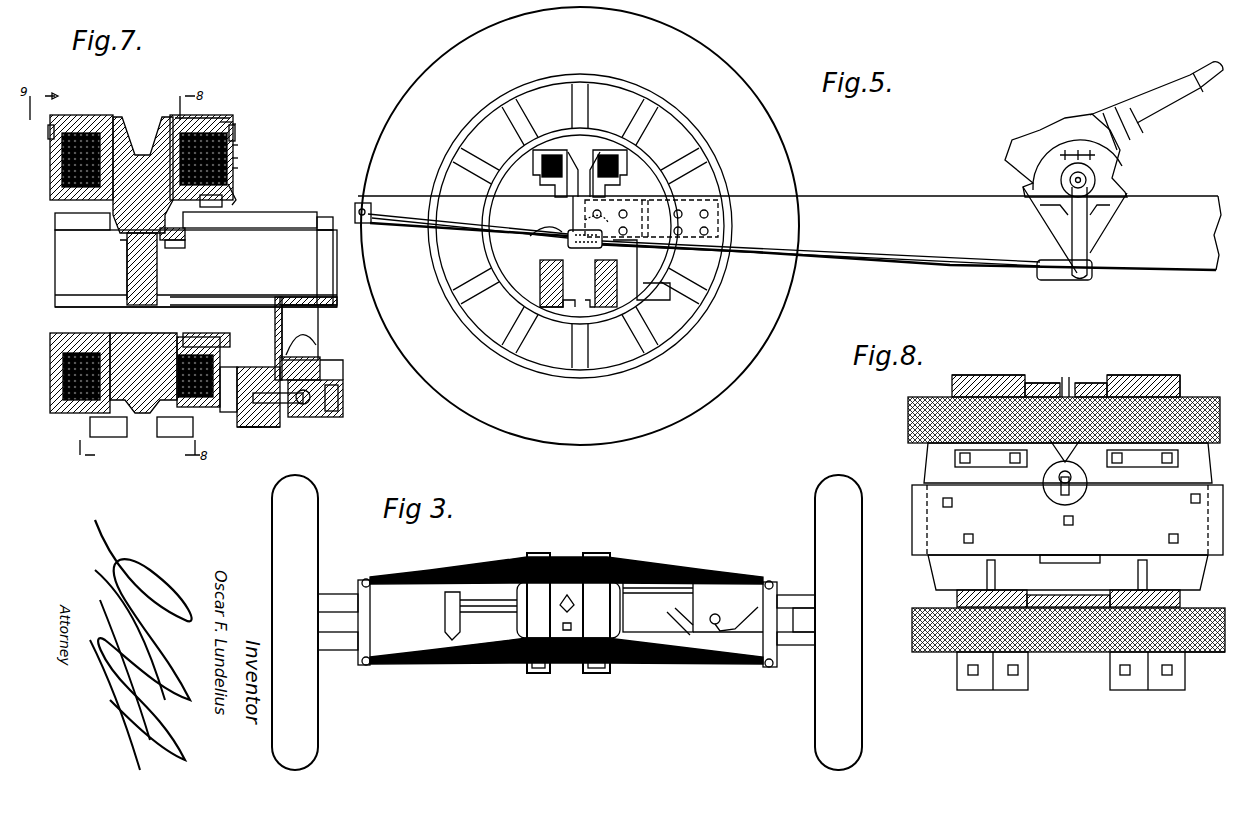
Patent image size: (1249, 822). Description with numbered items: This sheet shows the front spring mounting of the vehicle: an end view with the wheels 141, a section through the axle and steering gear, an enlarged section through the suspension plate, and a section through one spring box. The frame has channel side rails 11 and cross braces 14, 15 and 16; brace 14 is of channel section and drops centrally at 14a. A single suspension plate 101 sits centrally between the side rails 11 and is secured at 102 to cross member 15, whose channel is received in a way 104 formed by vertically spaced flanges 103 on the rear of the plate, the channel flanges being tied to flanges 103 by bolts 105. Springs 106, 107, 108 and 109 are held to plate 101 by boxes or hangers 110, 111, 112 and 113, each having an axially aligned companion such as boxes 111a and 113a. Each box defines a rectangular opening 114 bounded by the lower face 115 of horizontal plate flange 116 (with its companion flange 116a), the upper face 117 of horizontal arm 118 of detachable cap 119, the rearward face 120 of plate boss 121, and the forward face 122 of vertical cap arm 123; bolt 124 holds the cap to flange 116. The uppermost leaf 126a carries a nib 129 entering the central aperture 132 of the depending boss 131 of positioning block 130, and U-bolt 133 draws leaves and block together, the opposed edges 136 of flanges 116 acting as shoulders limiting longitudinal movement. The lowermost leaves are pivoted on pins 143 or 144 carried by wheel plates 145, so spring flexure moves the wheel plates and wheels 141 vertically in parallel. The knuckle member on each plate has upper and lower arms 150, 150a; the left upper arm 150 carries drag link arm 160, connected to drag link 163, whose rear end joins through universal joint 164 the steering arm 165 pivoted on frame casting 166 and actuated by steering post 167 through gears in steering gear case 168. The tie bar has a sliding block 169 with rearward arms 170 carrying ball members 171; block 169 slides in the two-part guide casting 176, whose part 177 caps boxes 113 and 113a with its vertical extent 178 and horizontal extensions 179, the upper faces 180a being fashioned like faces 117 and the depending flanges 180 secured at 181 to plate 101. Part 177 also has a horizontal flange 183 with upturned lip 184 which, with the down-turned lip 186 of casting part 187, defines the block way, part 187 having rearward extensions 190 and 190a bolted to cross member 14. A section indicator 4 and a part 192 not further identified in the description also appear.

In FIG. 3, the section line 4 is at (445, 620).
In FIG. 7, the channel side rail 11 is at (56, 250).
In FIG. 5, the channel side rail 11 is at (789, 233).
In FIG. 3, the channel side rail 11 is at (690, 614).
In FIG. 7, the cross brace 14 is at (275, 245).
In FIG. 7, the dropped central portion of cross brace 14a is at (318, 324).
In FIG. 7, the cross brace 15 is at (158, 252).
In FIG. 3, the cross brace 15 is at (605, 610).
In FIG. 8, the cross brace 15 is at (1067, 537).
In FIG. 5, the cross brace 16 is at (370, 205).
In FIG. 7, the suspension plate 101 is at (118, 288).
In FIG. 5, the suspension plate 101 is at (582, 165).
In FIG. 8, the suspension plate 101 is at (1195, 468).
In FIG. 7, the securing point 102 is at (125, 250).
In FIG. 7, the flanges 103 is at (185, 230).
In FIG. 7, the way 104 is at (100, 222).
In FIG. 7, the bolts 105 is at (188, 244).
In FIG. 5, the bolts 105 is at (540, 172).
In FIG. 7, the spring 106 is at (112, 118).
In FIG. 7, the spring 107 is at (236, 135).
In FIG. 5, the spring 107 is at (625, 162).
In FIG. 8, the spring 107 is at (1205, 395).
In FIG. 7, the spring 108 is at (215, 300).
In FIG. 5, the spring 108 is at (540, 277).
In FIG. 7, the spring 109 is at (279, 298).
In FIG. 5, the spring 109 is at (608, 302).
In FIG. 7, the spring box 110 is at (62, 118).
In FIG. 7, the spring box 111 is at (215, 118).
In FIG. 8, the spring box 111 is at (995, 377).
In FIG. 8, the companion spring box 111a is at (1140, 377).
In FIG. 7, the spring box 112 is at (88, 420).
In FIG. 7, the spring box 113 is at (78, 455).
In FIG. 8, the spring box 113 is at (992, 665).
In FIG. 7, the companion spring box 113a is at (195, 300).
In FIG. 8, the companion spring box 113a is at (1150, 665).
In FIG. 7, the rectangular opening 114 is at (236, 158).
In FIG. 7, the lower face of plate flange 115 is at (222, 122).
In FIG. 7, the horizontal plate flange 116 is at (205, 120).
In FIG. 8, the horizontal plate flange 116 is at (965, 377).
In FIG. 7, the coil strip 116a is at (200, 340).
In FIG. 7, the upper face of cap arm 117 is at (222, 205).
In FIG. 7, the horizontal arm of cap 118 is at (236, 186).
In FIG. 8, the horizontal arm of cap 118 is at (992, 468).
In FIG. 7, the detachable cap 119 is at (237, 168).
In FIG. 7, the rearward face of plate boss 120 is at (165, 118).
In FIG. 7, the plate boss 121 is at (160, 160).
In FIG. 7, the forward face of cap arm 122 is at (55, 130).
In FIG. 7, the vertical cap arm 123 is at (237, 147).
In FIG. 7, the bolt 124 is at (235, 125).
In FIG. 8, the uppermost spring leaf 126a is at (1190, 396).
In FIG. 8, the recess 129 is at (1072, 450).
In FIG. 8, the positioning block 130 is at (1088, 383).
In FIG. 8, the depending boss 131 is at (1048, 383).
In FIG. 8, the central aperture 132 is at (1066, 377).
In FIG. 8, the U-bolt 133 is at (1052, 493).
In FIG. 8, the side edges of flanges 136 is at (1028, 377).
In FIG. 5, the wheel 141 is at (580, 226).
In FIG. 3, the wheel 141 is at (567, 622).
In FIG. 3, the pin 143 is at (372, 580).
In FIG. 3, the pin 144 is at (372, 664).
In FIG. 3, the wheel plate 145 is at (580, 623).
In FIG. 3, the upper knuckle arm 150 is at (335, 596).
In FIG. 3, the lower knuckle arm 150a is at (335, 645).
In FIG. 5, the drag link arm 160 is at (594, 262).
In FIG. 3, the drag link arm 160 is at (735, 618).
In FIG. 5, the drag link 163 is at (815, 254).
In FIG. 5, the universal joint 164 is at (1050, 260).
In FIG. 5, the steering arm 165 is at (1088, 258).
In FIG. 5, the frame carried casting 166 is at (1105, 196).
In FIG. 5, the steering post 167 is at (1200, 76).
In FIG. 5, the steering gear case 168 is at (1046, 135).
In FIG. 7, the sliding block 169 is at (272, 428).
In FIG. 7, the rearward arms 170 is at (300, 358).
In FIG. 7, the ball members 171 is at (320, 362).
In FIG. 7, the two-part guide casting 176 is at (262, 428).
In FIG. 7, the casting part 177 is at (232, 412).
In FIG. 7, the vertical extent of casting part 178 is at (258, 368).
In FIG. 7, the horizontal extensions 179 is at (208, 412).
In FIG. 8, the horizontal extensions 179 is at (1110, 655).
In FIG. 7, the depending flanges 180 is at (178, 420).
In FIG. 3, the depending flanges 180 is at (578, 555).
In FIG. 8, the depending flanges 180 is at (965, 690).
In FIG. 8, the upper faces of extensions 180a is at (950, 655).
In FIG. 7, the securing point 181 is at (160, 430).
In FIG. 7, the horizontal flange 183 is at (256, 430).
In FIG. 7, the upturned lip 184 is at (285, 418).
In FIG. 7, the down-turned lip 186 is at (300, 340).
In FIG. 7, the casting part 187 is at (320, 298).
In FIG. 7, the rearward horizontal extensions 190 is at (330, 372).
In FIG. 8, the rail cap 190a is at (1190, 650).
In FIG. 7, the spring cap 192 is at (335, 396).